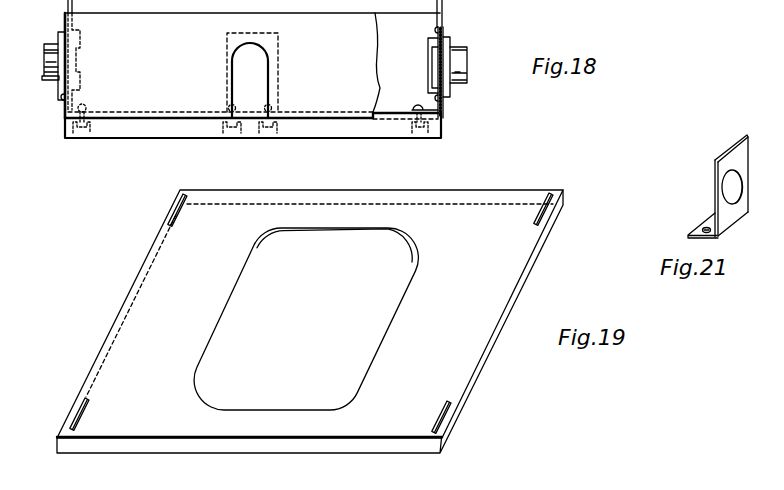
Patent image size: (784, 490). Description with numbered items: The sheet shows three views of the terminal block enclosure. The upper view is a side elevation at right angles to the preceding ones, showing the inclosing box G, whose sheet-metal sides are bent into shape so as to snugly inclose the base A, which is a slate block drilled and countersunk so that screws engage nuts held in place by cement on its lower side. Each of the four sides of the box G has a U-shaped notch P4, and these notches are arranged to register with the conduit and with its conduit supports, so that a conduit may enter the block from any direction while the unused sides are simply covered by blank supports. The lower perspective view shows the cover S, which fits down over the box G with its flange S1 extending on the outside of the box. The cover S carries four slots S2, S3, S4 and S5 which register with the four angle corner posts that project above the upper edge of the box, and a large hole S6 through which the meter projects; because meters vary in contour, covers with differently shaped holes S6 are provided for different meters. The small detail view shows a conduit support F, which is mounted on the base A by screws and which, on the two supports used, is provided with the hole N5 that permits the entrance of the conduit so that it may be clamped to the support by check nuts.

In FIG. 18, the box G is at (254, 61).
In FIG. 18, the base A is at (383, 127).
In FIG. 18, the U-shaped notch P4 is at (252, 76).
In FIG. 19, the cover S is at (310, 321).
In FIG. 19, the flange S1 is at (487, 212).
In FIG. 19, the slot S2 is at (178, 218).
In FIG. 19, the slot S3 is at (85, 407).
In FIG. 19, the slot S4 is at (443, 407).
In FIG. 19, the slot S5 is at (534, 223).
In FIG. 19, the hole S6 is at (306, 319).
In FIG. 21, the hole N5 is at (730, 192).
In FIG. 21, the conduit support F is at (742, 208).